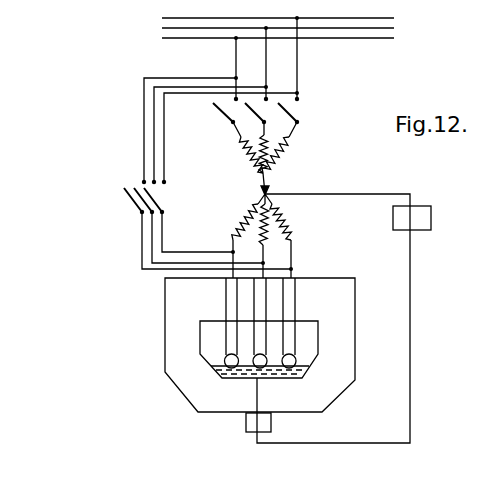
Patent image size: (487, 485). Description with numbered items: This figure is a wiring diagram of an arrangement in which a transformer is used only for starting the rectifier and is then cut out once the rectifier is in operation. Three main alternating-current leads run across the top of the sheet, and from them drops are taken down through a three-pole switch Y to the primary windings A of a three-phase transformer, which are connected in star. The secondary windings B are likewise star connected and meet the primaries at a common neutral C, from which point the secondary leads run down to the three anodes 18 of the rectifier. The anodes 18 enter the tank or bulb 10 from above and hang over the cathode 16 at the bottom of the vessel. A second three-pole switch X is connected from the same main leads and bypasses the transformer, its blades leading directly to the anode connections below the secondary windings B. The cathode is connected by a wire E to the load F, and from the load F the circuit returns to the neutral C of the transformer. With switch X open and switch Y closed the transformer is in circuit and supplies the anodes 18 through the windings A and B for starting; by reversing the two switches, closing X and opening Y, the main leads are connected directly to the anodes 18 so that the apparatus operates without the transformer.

The furnace 10 is at (165, 353).
The crucible / hearth 16 is at (319, 341).
The electrodes 18 is at (293, 302).
The primary windings A is at (244, 157).
The secondary windings B is at (246, 219).
The neutral C is at (268, 188).
The wire E is at (349, 441).
The load F is at (438, 216).
The switch X is at (133, 203).
The switch Y is at (297, 121).